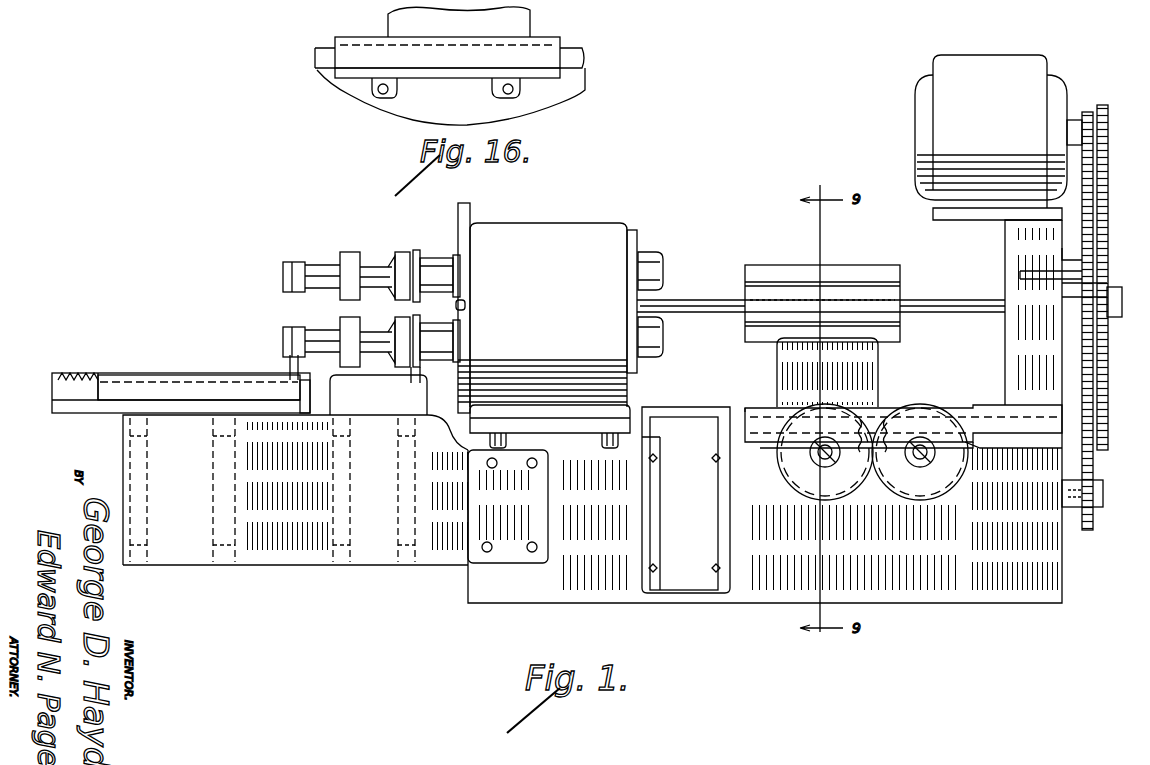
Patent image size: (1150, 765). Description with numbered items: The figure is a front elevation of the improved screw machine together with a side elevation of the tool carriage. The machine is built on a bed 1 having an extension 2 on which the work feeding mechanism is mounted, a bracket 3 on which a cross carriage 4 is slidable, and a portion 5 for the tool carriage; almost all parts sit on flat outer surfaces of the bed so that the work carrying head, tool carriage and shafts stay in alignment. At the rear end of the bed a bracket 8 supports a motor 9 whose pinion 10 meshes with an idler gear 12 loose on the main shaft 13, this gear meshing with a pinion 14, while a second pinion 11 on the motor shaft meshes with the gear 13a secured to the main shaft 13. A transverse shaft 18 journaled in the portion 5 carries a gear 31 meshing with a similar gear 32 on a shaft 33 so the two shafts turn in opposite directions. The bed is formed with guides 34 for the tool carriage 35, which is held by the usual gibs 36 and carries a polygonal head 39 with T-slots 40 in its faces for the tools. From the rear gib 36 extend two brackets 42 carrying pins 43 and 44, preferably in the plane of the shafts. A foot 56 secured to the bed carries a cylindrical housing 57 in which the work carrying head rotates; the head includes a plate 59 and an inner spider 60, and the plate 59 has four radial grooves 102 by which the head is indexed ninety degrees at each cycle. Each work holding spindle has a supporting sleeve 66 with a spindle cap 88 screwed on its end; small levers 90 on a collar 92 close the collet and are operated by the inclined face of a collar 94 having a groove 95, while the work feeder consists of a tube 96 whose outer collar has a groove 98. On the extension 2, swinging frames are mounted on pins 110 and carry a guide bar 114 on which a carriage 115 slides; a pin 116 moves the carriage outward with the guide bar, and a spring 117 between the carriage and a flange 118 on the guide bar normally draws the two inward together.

In FIG. 1, the bed 1 is at (746, 411).
In FIG. 1, the extension 2 is at (295, 490).
In FIG. 1, the bracket 3 is at (686, 505).
In FIG. 1, the cross carriage 4 is at (690, 407).
In FIG. 1, the portion for the tool carriage 5 is at (905, 524).
In FIG. 1, the bracket 8 is at (1033, 262).
In FIG. 1, the motor 9 is at (998, 137).
In FIG. 1, the pinion 10 is at (1087, 112).
In FIG. 1, the second pinion 11 is at (1102, 105).
In FIG. 1, the idler gear 12 is at (1051, 274).
In FIG. 1, the main shaft 13 is at (975, 300).
In FIG. 1, the gear 13a is at (1087, 420).
In FIG. 1, the pinion 14 is at (1090, 530).
In FIG. 1, the transverse shaft 18 is at (816, 458).
In FIG. 1, the gear 31 is at (825, 452).
In FIG. 1, the gear 32 is at (920, 452).
In FIG. 1, the shaft 33 is at (914, 460).
In FIG. 16, the guides 34 is at (325, 60).
In FIG. 1, the guides 34 is at (986, 412).
In FIG. 16, the tool carriage 35 is at (459, 22).
In FIG. 1, the tool carriage 35 is at (947, 408).
In FIG. 16, the gibs 36 is at (340, 77).
In FIG. 1, the gibs 36 is at (977, 442).
In FIG. 1, the polygonal head 39 is at (905, 300).
In FIG. 1, the T-slots 40 is at (872, 283).
In FIG. 16, the brackets 42 is at (389, 90).
In FIG. 16, the pin 43 is at (515, 90).
In FIG. 16, the pin 44 is at (380, 92).
In FIG. 1, the foot 56 is at (550, 426).
In FIG. 1, the cylindrical housing 57 is at (542, 315).
In FIG. 1, the plate 59 is at (470, 213).
In FIG. 1, the inner spider 60 is at (637, 236).
In FIG. 1, the supporting sleeve 66 is at (437, 258).
In FIG. 1, the spindle cap 88 is at (648, 260).
In FIG. 1, the small levers 90 is at (376, 306).
In FIG. 1, the collar 92 is at (350, 252).
In FIG. 1, the collar 94 is at (403, 252).
In FIG. 1, the groove 95 is at (416, 250).
In FIG. 1, the tube 96 is at (322, 264).
In FIG. 1, the groove 98 is at (296, 327).
In FIG. 1, the radial grooves 102 is at (466, 305).
In FIG. 1, the pins 110 is at (147, 497).
In FIG. 1, the guide bar 114 is at (96, 413).
In FIG. 1, the carriage 115 is at (180, 377).
In FIG. 1, the pin 116 is at (305, 383).
In FIG. 1, the spring 117 is at (84, 373).
In FIG. 1, the flange 118 is at (64, 379).